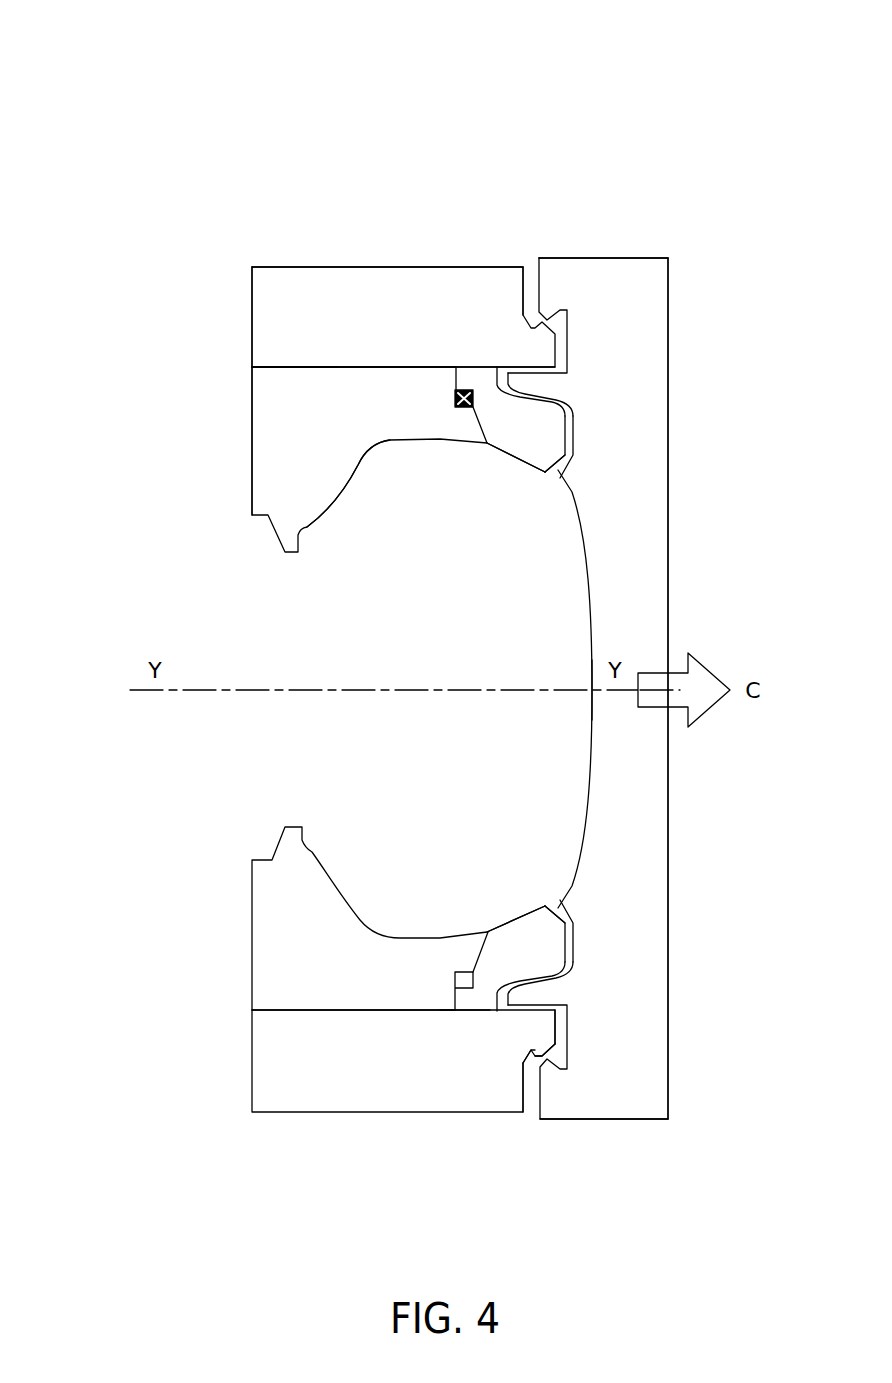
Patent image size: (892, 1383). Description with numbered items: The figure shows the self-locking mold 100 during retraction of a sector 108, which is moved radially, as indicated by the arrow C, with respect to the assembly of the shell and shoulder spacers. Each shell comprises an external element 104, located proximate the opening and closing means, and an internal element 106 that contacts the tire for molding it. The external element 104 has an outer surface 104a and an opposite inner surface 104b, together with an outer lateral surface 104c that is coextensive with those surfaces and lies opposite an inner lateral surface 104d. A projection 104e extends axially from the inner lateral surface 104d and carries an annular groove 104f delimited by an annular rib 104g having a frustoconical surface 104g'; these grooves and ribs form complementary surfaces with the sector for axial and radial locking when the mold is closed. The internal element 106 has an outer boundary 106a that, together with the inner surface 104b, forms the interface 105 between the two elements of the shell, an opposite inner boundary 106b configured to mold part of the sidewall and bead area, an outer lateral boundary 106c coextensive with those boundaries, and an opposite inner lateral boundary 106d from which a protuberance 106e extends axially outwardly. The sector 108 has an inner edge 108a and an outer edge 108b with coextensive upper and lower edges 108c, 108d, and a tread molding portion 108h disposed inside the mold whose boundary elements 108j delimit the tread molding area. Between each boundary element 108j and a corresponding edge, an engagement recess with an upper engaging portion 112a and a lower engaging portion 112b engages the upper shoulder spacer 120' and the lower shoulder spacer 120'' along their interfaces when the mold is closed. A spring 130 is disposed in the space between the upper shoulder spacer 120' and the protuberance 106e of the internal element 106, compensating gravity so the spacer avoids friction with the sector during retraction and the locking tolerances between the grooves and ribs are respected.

The self-locking mold 100 is at (385, 138).
The external element 104 is at (292, 283).
The outer surface 104a is at (320, 267).
The inner surface 104b is at (283, 367).
The outer lateral surface 104c is at (252, 305).
The inner lateral surface 104d is at (523, 290).
The projection 104e is at (537, 1027).
The annular groove 104f is at (532, 1052).
The annular rib 104g is at (656, 1016).
The frustoconical surface 104g' is at (648, 1057).
The interface 105 is at (283, 368).
The internal element 106 is at (293, 403).
The outer boundary 106a is at (337, 370).
The inner boundary 106b is at (358, 467).
The outer lateral boundary 106c is at (252, 493).
The inner lateral boundary 106d is at (455, 995).
The protuberance 106e is at (476, 945).
The sector 108 is at (632, 565).
The inner edge 108a is at (589, 592).
The outer edge 108b is at (668, 320).
The upper edge 108c is at (635, 258).
The lower edge 108d is at (640, 1119).
The tread molding portion 108h is at (592, 707).
The boundary element 108j is at (563, 483).
The upper engaging portion 112a is at (575, 460).
The lower engaging portion 112b is at (568, 410).
The upper shoulder spacer 120' is at (518, 441).
The lower shoulder spacer 120'' is at (518, 937).
The spring 130 is at (460, 408).